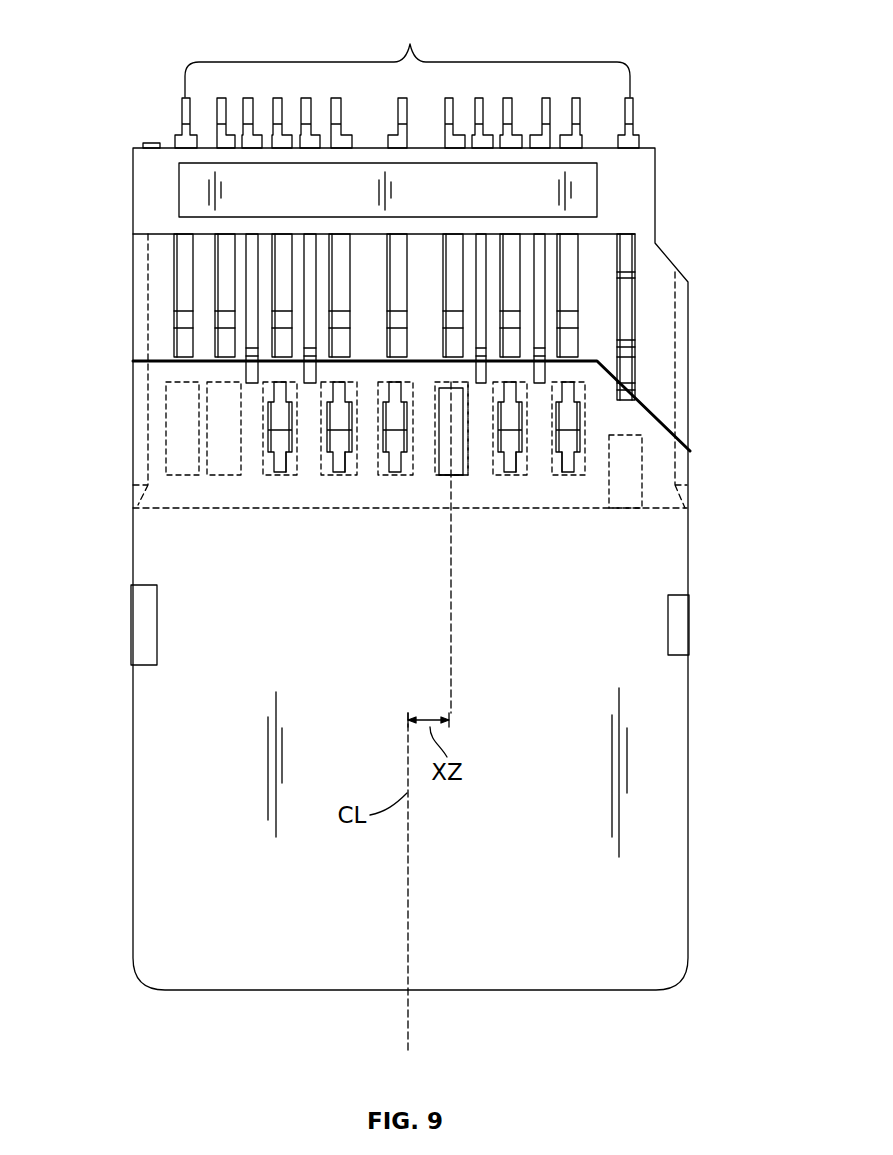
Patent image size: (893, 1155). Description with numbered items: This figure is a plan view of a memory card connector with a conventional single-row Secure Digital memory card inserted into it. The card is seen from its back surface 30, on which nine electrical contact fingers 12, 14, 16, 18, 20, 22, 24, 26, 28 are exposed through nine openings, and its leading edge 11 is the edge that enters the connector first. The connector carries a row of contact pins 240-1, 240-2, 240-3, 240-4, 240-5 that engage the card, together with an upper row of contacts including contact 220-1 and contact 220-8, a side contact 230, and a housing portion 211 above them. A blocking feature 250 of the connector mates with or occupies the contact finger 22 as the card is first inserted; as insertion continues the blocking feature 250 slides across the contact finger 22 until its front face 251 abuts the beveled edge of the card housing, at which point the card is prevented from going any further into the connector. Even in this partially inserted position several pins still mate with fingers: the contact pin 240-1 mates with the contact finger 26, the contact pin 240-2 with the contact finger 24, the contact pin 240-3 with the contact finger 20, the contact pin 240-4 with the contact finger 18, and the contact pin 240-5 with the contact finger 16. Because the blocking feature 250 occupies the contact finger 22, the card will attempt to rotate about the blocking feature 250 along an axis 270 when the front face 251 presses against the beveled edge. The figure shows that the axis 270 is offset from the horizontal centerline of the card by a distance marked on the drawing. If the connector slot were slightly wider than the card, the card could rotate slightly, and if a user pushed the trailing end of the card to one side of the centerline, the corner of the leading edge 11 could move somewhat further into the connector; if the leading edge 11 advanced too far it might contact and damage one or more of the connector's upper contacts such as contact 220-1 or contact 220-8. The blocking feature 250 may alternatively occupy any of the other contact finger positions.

The contact finger 20 is at (410, 44).
The housing upper portion 211 is at (142, 212).
The first row contact 220-1 is at (568, 272).
The first row contact 220-8 is at (183, 295).
The side contact 230 is at (628, 370).
The leading edge 11 is at (142, 357).
The contact finger 12 is at (178, 395).
The contact finger 14 is at (207, 445).
The contact finger 16 is at (290, 470).
The contact finger 18 is at (347, 470).
The contact finger 22 is at (477, 467).
The contact finger 24 is at (520, 470).
The contact finger 26 is at (553, 470).
The contact finger 28 is at (628, 472).
The contact pin 240-1 is at (572, 418).
The contact pin 240-2 is at (513, 437).
The contact pin 240-3 is at (392, 437).
The contact pin 240-4 is at (335, 470).
The contact pin 240-5 is at (280, 470).
The blocking feature 250 is at (438, 476).
The front face 251 is at (452, 478).
The axis 270 is at (450, 618).
The back surface 30 is at (680, 742).